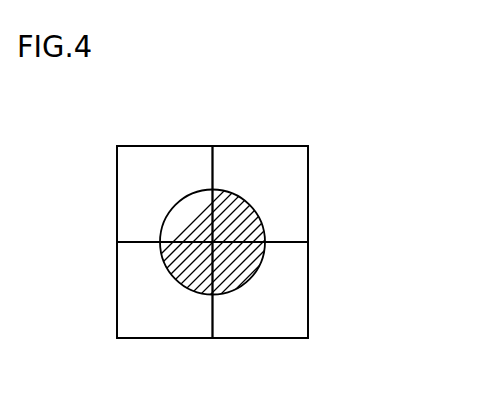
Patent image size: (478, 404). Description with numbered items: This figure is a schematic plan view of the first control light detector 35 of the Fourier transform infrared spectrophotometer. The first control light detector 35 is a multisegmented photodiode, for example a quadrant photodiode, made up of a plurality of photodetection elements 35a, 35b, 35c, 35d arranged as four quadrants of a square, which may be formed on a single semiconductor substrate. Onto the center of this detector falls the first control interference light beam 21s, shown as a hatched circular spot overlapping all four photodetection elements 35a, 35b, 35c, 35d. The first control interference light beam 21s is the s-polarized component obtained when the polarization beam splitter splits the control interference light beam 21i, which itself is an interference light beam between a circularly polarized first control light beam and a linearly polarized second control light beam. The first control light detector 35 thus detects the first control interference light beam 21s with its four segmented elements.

The first control light detector 35 is at (315, 122).
The photodetection element 35a is at (258, 153).
The photodetection element 35b is at (158, 153).
The photodetection element 35c is at (265, 324).
The photodetection element 35d is at (164, 324).
The control interference light beam 21i is at (231, 225).
The first control interference light beam 21s is at (268, 213).